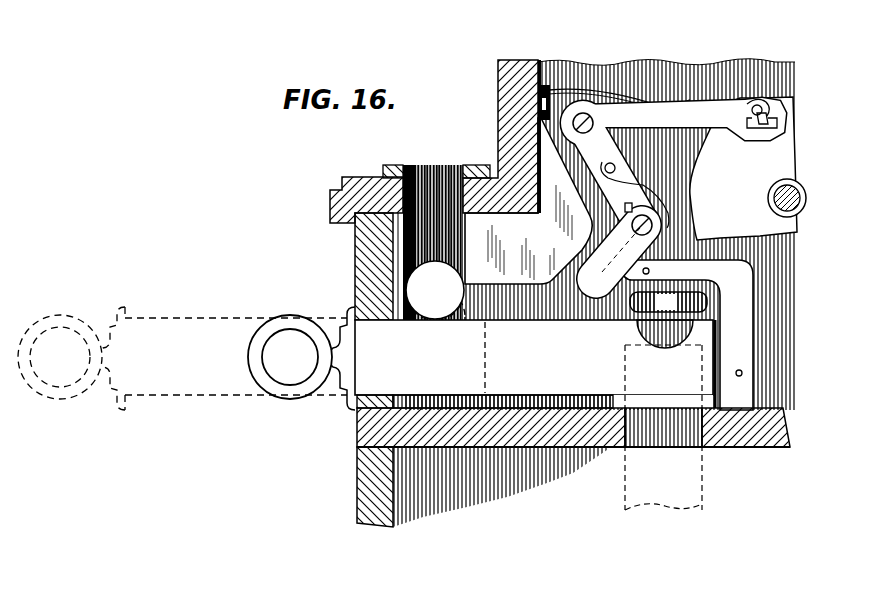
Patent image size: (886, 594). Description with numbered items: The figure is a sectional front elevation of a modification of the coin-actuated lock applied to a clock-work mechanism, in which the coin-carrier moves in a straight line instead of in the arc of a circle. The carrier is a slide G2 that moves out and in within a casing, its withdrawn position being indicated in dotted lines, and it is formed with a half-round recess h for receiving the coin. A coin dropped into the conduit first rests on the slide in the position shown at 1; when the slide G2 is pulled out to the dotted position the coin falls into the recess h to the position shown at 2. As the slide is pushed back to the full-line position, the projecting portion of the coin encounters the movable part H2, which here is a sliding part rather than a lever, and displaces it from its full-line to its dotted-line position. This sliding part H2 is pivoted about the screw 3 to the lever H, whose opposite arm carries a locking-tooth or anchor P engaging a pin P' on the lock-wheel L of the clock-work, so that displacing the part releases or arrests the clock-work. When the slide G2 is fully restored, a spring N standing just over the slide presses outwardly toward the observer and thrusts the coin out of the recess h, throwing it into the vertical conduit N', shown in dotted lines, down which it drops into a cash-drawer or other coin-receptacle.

The coin position on slide 1 is at (435, 290).
The coin position after slide withdrawal 2 is at (435, 317).
The pivot screw of lever H 3 is at (589, 124).
The lever H is at (673, 165).
The movable part H2 is at (622, 241).
The slide G2 is at (365, 358).
The half-round recess h is at (657, 340).
The spring N is at (668, 302).
The vertical conduit N' is at (663, 427).
The lock-wheel L is at (748, 168).
The locking-tooth or anchor P is at (749, 113).
The pin on lock-wheel P' is at (768, 112).